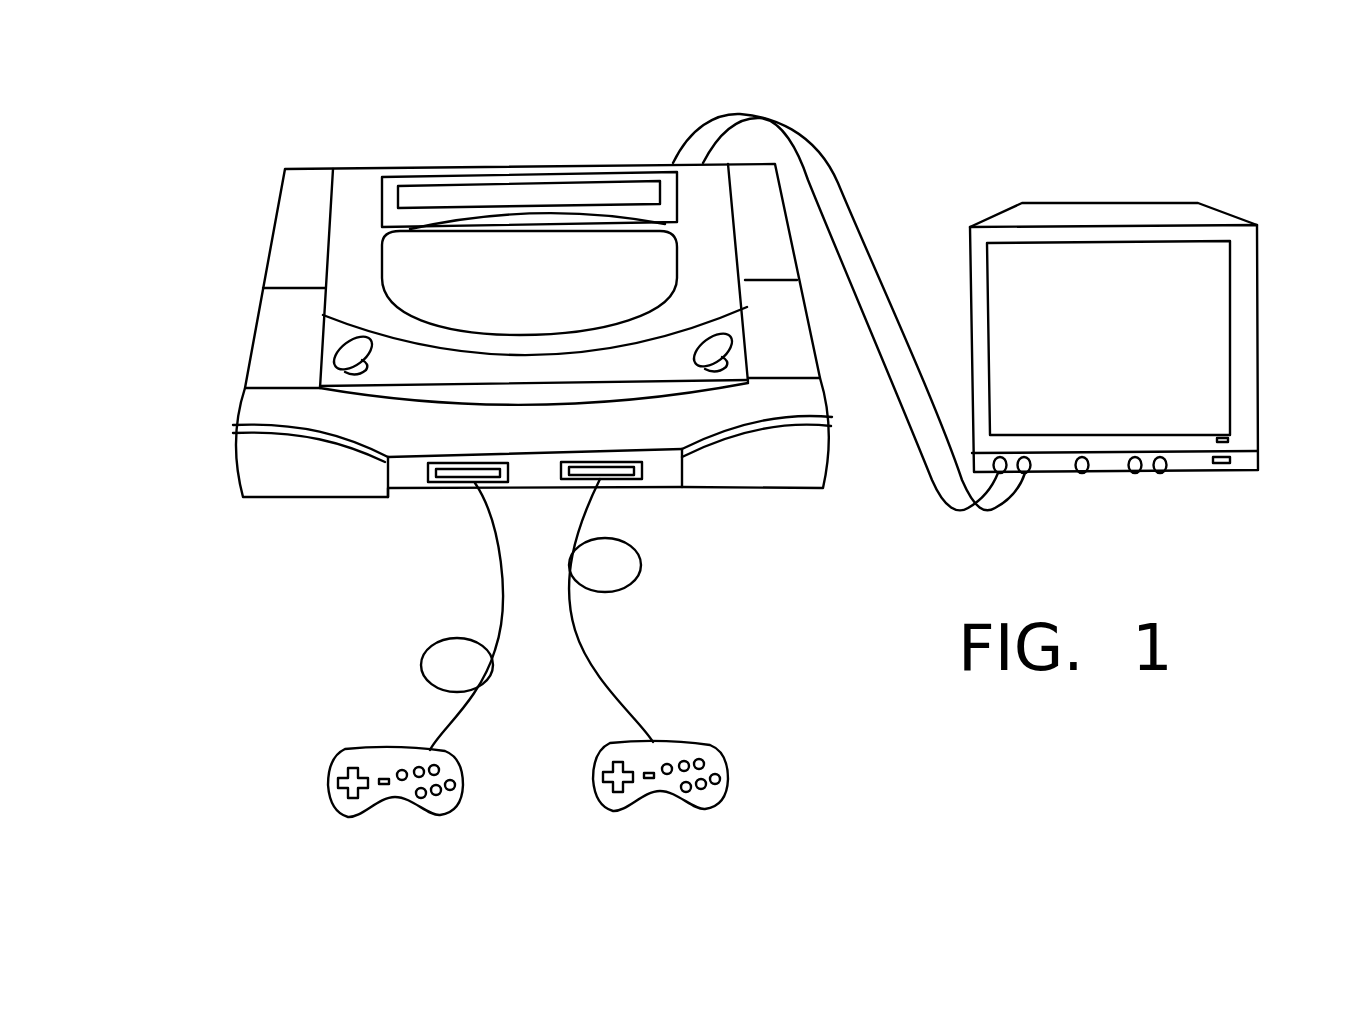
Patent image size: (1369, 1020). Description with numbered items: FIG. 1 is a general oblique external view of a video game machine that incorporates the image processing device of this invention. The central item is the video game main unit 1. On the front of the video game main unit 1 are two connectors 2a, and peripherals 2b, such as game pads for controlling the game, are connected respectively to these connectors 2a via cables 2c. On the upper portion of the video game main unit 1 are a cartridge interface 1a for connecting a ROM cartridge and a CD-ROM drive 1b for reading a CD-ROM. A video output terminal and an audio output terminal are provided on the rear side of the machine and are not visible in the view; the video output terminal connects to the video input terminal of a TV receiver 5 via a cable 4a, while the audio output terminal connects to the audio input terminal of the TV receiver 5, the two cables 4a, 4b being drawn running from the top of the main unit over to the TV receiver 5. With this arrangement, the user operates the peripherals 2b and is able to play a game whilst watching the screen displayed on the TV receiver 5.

The video game main unit 1 is at (235, 415).
The cartridge interface 1a is at (432, 188).
The CD-ROM drive 1b is at (627, 240).
The connectors 2a is at (440, 483).
The peripherals 2b is at (335, 815).
The cables 2c is at (418, 668).
The cable 4a is at (856, 218).
The cable 4b is at (897, 415).
The TV receiver 5 is at (1257, 355).